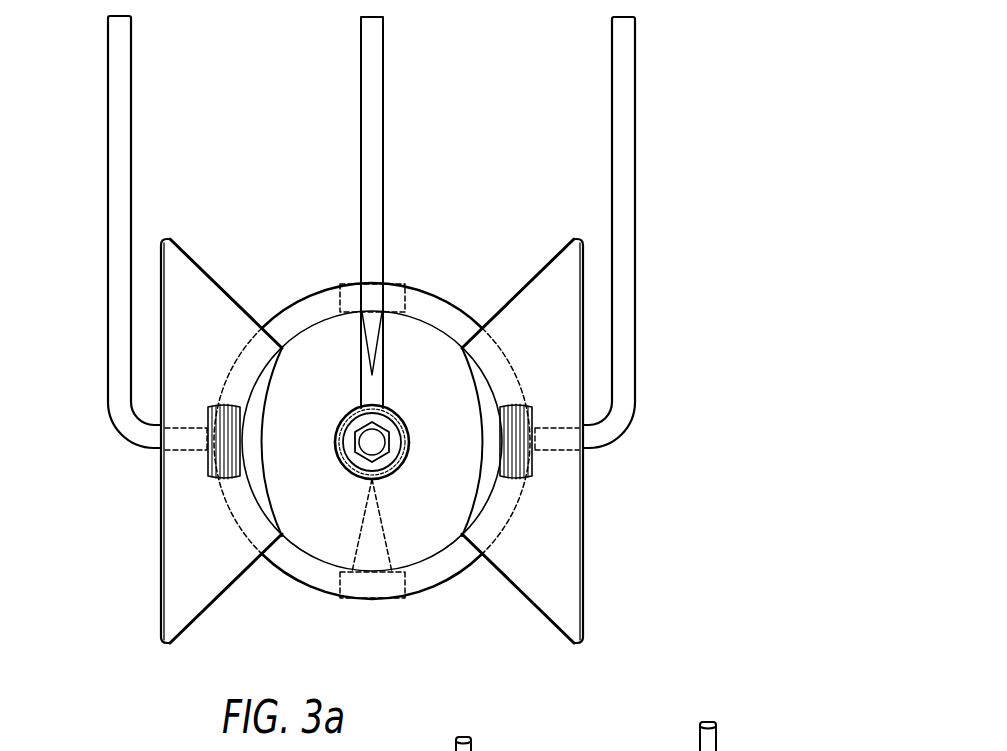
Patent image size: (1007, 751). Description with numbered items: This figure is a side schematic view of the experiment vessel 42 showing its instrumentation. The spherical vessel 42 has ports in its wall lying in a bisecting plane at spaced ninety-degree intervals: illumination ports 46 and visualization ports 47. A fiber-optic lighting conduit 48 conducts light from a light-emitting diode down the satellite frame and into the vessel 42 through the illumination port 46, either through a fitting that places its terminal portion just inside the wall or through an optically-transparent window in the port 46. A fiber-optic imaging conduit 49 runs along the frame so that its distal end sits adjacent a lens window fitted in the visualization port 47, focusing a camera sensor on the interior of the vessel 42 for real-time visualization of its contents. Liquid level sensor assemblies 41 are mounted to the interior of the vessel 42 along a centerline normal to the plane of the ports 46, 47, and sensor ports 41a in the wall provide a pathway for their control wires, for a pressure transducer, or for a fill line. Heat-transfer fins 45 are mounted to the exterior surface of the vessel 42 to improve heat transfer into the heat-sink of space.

The liquid level sensor assembly 41 is at (370, 343).
The sensor port 41a is at (342, 291).
The experiment vessel 42 is at (303, 294).
The heat-transfer fins 45 is at (165, 557).
The illumination port 46 is at (393, 468).
The visualization port 47 is at (385, 407).
The fiber-optic lighting conduit 48 is at (630, 281).
The fiber-optic imaging conduit 49 is at (114, 291).